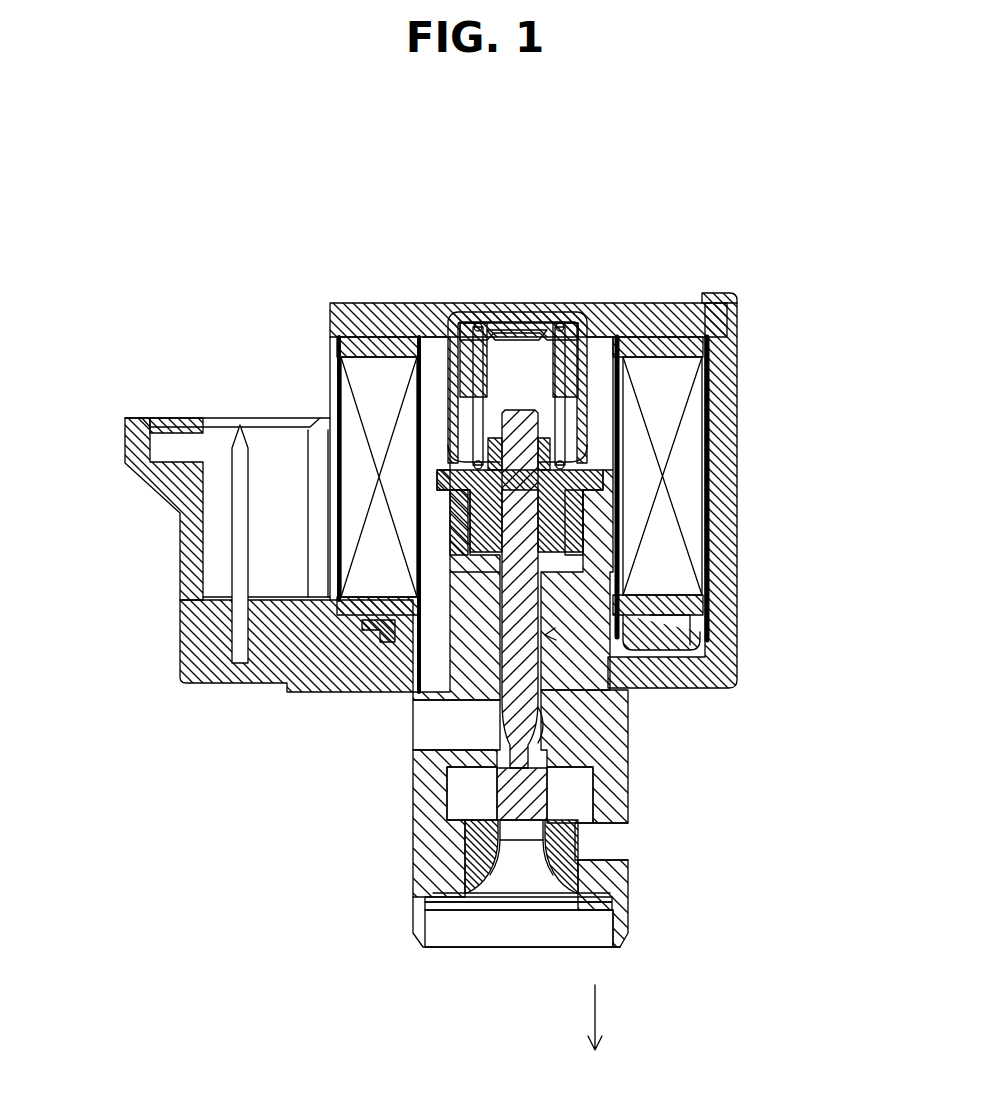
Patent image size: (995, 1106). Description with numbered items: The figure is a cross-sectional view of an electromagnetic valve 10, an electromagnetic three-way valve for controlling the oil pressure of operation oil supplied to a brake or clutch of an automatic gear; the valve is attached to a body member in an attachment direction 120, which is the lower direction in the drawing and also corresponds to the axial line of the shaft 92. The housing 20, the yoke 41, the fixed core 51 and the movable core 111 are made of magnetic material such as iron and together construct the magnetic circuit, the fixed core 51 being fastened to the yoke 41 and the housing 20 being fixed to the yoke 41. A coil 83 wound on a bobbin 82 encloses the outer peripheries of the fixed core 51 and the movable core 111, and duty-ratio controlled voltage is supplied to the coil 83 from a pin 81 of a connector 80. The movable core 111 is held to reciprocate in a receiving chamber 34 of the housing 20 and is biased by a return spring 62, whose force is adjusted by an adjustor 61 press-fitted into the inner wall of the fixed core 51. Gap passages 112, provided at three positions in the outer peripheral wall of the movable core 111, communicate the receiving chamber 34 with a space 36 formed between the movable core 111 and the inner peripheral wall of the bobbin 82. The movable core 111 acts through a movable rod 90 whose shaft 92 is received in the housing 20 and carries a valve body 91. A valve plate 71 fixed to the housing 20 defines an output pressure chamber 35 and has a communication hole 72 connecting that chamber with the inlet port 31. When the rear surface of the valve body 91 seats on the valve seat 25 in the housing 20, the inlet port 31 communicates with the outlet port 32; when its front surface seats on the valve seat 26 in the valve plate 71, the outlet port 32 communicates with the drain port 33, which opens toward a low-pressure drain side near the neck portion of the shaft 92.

The electromagnetic valve 10 is at (752, 340).
The housing 20 is at (610, 718).
The valve seat 25 is at (490, 762).
The valve seat 26 is at (485, 828).
The inlet port 31 is at (465, 935).
The outlet port 32 is at (615, 848).
The drain port 33 is at (438, 738).
The receiving chamber 34 is at (570, 565).
The output pressure chamber 35 is at (578, 800).
The space 36 is at (603, 490).
The yoke 41 is at (712, 607).
The fixed core 51 is at (665, 318).
The adjustor 61 is at (560, 372).
The return spring 62 is at (535, 333).
The valve plate 71 is at (448, 900).
The communication hole 72 is at (530, 835).
The connector 80 is at (115, 448).
The pin 81 is at (236, 450).
The bobbin 82 is at (385, 340).
The coil 83 is at (360, 370).
The movable rod 90 is at (545, 635).
The valve body 91 is at (490, 800).
The shaft 92 is at (450, 657).
The movable core 111 is at (567, 517).
The gap passages 112 is at (460, 525).
The attachment direction 120 is at (600, 1045).